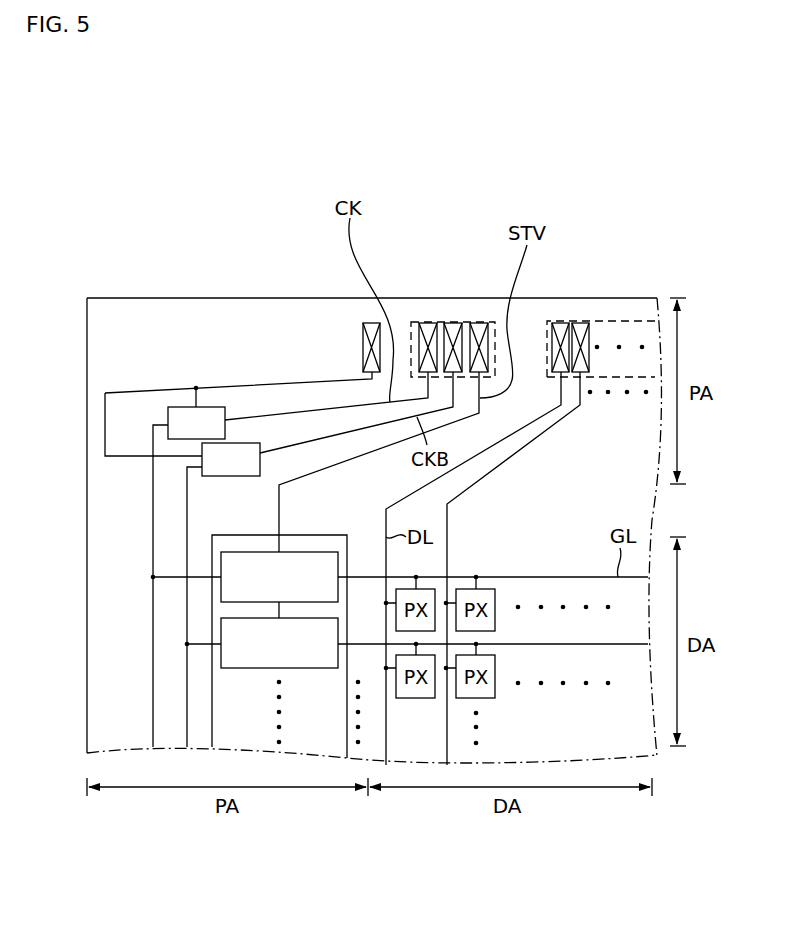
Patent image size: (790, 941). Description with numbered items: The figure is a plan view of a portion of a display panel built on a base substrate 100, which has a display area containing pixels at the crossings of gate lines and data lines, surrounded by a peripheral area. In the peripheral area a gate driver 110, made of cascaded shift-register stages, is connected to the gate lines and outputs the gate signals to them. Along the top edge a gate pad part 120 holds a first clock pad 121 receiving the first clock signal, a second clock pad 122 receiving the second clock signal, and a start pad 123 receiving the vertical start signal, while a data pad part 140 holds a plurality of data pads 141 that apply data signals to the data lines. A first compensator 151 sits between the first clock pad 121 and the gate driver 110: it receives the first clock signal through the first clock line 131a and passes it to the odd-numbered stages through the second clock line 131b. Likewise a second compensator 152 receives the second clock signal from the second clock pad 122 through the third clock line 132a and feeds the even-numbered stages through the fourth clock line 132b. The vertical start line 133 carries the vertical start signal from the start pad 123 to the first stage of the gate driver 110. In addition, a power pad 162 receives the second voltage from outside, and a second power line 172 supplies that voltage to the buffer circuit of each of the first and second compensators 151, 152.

The base substrate 100 is at (200, 298).
The gate driver 110 is at (312, 535).
The gate pad part 120 is at (439, 296).
The first clock pad 121 is at (428, 323).
The second clock pad 122 is at (453, 323).
The start pad 123 is at (479, 323).
The first clock line 131a is at (302, 412).
The second clock line 131b is at (153, 512).
The third clock line 132a is at (343, 433).
The fourth clock line 132b is at (187, 550).
The vertical start line 133 is at (385, 447).
The data pad part 140 is at (600, 302).
The data pad 141 is at (561, 323).
The first compensator 151 is at (205, 407).
The second compensator 152 is at (247, 443).
The power pad 162 is at (366, 323).
The second power line 172 is at (150, 391).